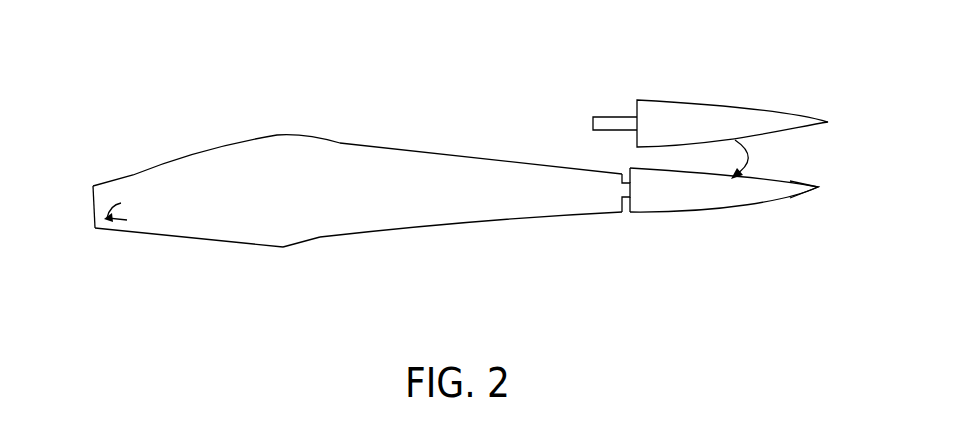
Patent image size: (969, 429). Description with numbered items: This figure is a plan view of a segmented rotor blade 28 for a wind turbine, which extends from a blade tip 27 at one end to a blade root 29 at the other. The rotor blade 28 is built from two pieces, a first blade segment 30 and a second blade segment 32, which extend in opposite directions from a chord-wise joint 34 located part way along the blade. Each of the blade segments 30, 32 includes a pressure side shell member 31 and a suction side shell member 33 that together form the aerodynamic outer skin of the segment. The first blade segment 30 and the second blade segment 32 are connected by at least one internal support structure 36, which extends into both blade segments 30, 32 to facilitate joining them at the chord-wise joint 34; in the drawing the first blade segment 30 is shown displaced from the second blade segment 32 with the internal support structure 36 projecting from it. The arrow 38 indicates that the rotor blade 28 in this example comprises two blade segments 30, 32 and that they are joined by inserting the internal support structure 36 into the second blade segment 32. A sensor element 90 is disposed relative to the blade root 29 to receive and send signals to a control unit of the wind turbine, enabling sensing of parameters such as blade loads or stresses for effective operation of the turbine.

The rotor blade 28 is at (163, 67).
The blade root 29 is at (117, 180).
The sensor element 90 is at (92, 220).
The second blade segment 32 is at (168, 235).
The pressure side shell member 31 is at (318, 238).
The suction side shell member 33 is at (518, 232).
The chord-wise joint 34 is at (620, 214).
The first blade segment 30 is at (710, 102).
The internal support structure 36 is at (609, 114).
The arrow 38 is at (750, 157).
The blade tip 27 is at (818, 187).